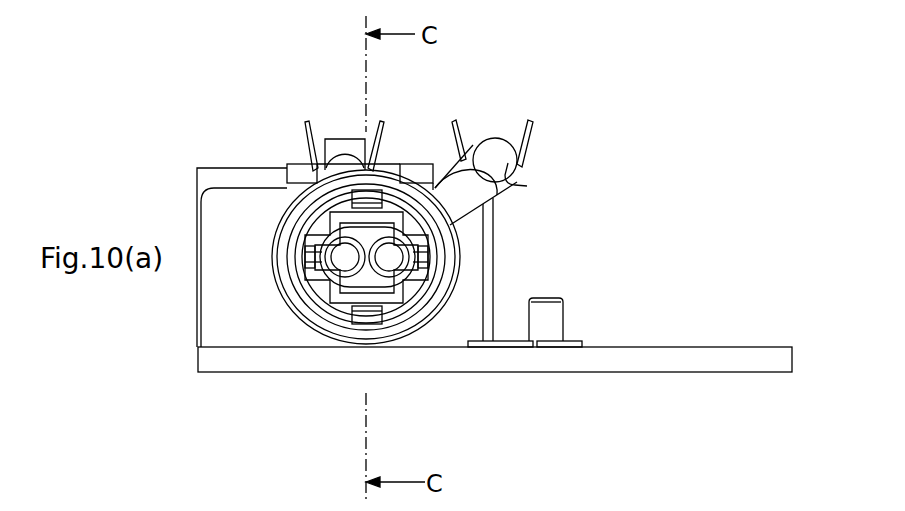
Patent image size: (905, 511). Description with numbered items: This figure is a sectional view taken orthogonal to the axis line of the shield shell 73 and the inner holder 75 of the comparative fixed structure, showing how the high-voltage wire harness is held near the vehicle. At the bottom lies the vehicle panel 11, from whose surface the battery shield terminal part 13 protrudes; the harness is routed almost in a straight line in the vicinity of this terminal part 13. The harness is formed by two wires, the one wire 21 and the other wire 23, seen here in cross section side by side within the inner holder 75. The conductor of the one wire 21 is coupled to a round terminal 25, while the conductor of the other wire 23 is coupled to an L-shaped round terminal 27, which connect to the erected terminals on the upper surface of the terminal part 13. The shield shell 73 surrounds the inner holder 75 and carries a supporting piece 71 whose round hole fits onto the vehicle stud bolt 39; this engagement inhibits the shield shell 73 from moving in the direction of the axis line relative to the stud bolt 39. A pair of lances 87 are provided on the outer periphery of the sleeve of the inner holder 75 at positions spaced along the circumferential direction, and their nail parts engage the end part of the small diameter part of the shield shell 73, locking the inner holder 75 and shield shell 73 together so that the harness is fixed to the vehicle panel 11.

The vehicle panel 11 is at (762, 346).
The battery shield terminal part 13 is at (197, 208).
The wire 21 is at (345, 138).
The wire 23 is at (490, 160).
The round terminal 25 is at (304, 140).
The L-shaped round terminal 27 is at (533, 143).
The vehicle stud bolt 39 is at (548, 298).
The supporting piece 71 is at (576, 341).
The shield shell 73 is at (296, 328).
The inner holder 75 is at (421, 296).
The lance 87 is at (372, 196).